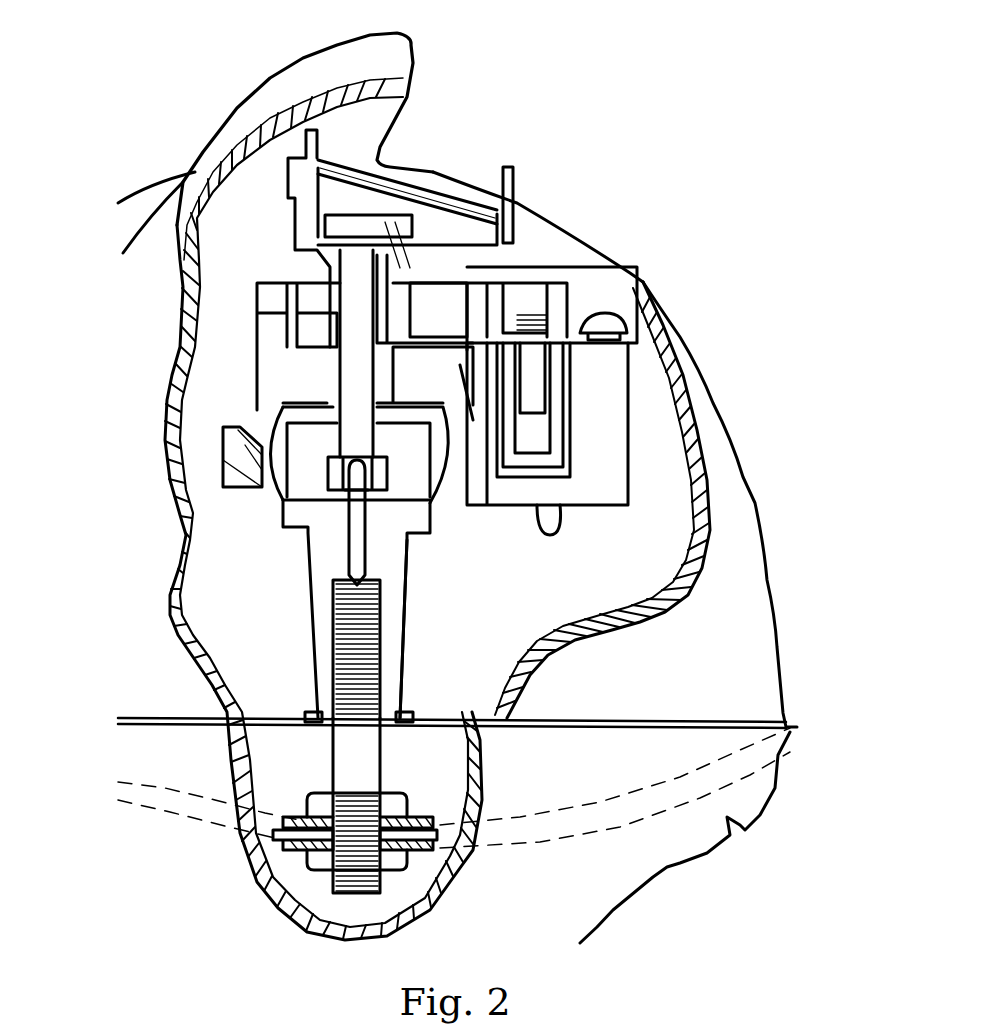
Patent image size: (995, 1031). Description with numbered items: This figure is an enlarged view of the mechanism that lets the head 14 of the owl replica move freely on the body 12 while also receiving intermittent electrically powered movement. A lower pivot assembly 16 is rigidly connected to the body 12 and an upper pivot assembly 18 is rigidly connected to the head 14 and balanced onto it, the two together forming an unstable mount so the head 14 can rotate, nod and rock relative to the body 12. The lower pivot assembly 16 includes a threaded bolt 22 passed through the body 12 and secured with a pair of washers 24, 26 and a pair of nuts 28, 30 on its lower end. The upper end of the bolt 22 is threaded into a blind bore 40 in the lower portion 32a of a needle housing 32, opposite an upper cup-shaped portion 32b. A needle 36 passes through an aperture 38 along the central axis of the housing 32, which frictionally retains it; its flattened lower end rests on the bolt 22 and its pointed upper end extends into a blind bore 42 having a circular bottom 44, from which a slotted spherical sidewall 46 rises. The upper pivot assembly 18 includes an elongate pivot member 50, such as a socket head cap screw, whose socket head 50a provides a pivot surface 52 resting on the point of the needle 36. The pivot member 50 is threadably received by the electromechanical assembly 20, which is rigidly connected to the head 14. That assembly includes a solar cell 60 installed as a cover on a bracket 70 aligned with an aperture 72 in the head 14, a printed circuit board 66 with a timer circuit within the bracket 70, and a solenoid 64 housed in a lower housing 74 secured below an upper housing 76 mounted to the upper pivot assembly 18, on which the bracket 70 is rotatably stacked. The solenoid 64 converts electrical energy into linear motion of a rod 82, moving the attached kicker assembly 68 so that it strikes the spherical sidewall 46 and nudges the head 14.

The body 12 is at (454, 835).
The head 14 is at (457, 505).
The lower pivot assembly 16 is at (400, 750).
The upper pivot assembly 18 is at (320, 492).
The electromechanical assembly 20 is at (277, 236).
The threaded bolt 22 is at (333, 743).
The washer 24 is at (283, 817).
The washer 26 is at (287, 843).
The nut 28 is at (405, 803).
The nut 30 is at (400, 873).
The needle housing 32 is at (422, 594).
The lower portion 32a is at (407, 623).
The cup-shaped portion 32b is at (263, 470).
The needle 36 is at (347, 545).
The aperture 38 is at (370, 500).
The blind bore 40 is at (333, 653).
The blind bore 42 is at (402, 445).
The circular bottom 44 is at (325, 497).
The spherical sidewall 46 is at (262, 440).
The pivot member 50 is at (350, 397).
The socket head 50a is at (387, 473).
The pivot surface 52 is at (353, 458).
The solar cell 60 is at (462, 200).
The solenoid 64 is at (572, 407).
The printed circuit board 66 is at (367, 213).
The kicker assembly 68 is at (220, 447).
The bracket 70 is at (288, 177).
The aperture 72 is at (447, 160).
The lower housing 74 is at (628, 477).
The upper housing 76 is at (645, 315).
The rod 82 is at (540, 367).